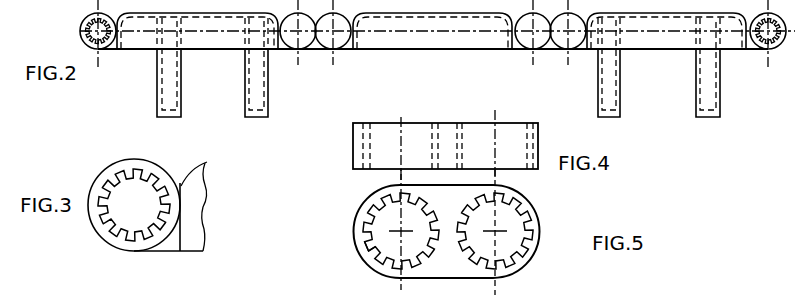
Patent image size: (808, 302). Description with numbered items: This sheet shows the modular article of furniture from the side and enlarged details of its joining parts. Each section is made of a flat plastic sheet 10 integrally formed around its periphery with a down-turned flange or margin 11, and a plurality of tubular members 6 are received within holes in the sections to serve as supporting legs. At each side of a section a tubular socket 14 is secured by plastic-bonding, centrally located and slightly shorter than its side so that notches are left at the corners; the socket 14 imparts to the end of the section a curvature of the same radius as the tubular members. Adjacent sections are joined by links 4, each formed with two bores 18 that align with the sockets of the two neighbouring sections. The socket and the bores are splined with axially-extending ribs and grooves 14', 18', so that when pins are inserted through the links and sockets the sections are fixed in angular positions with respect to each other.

In FIG. 2, the flat plastic sheet 10 is at (204, 13).
In FIG. 2, the down-turned flange 11 is at (223, 50).
In FIG. 2, the tubular member 6 is at (181, 76).
In FIG. 3, the tubular socket 14 is at (147, 194).
In FIG. 3, the ribs and grooves of tubular socket 14' is at (125, 190).
In FIG. 4, the link 4 is at (538, 126).
In FIG. 5, the link 4 is at (537, 212).
In FIG. 4, the bore 18 is at (450, 131).
In FIG. 5, the bore 18 is at (448, 231).
In FIG. 5, the ribs and grooves of bore 18' is at (354, 264).